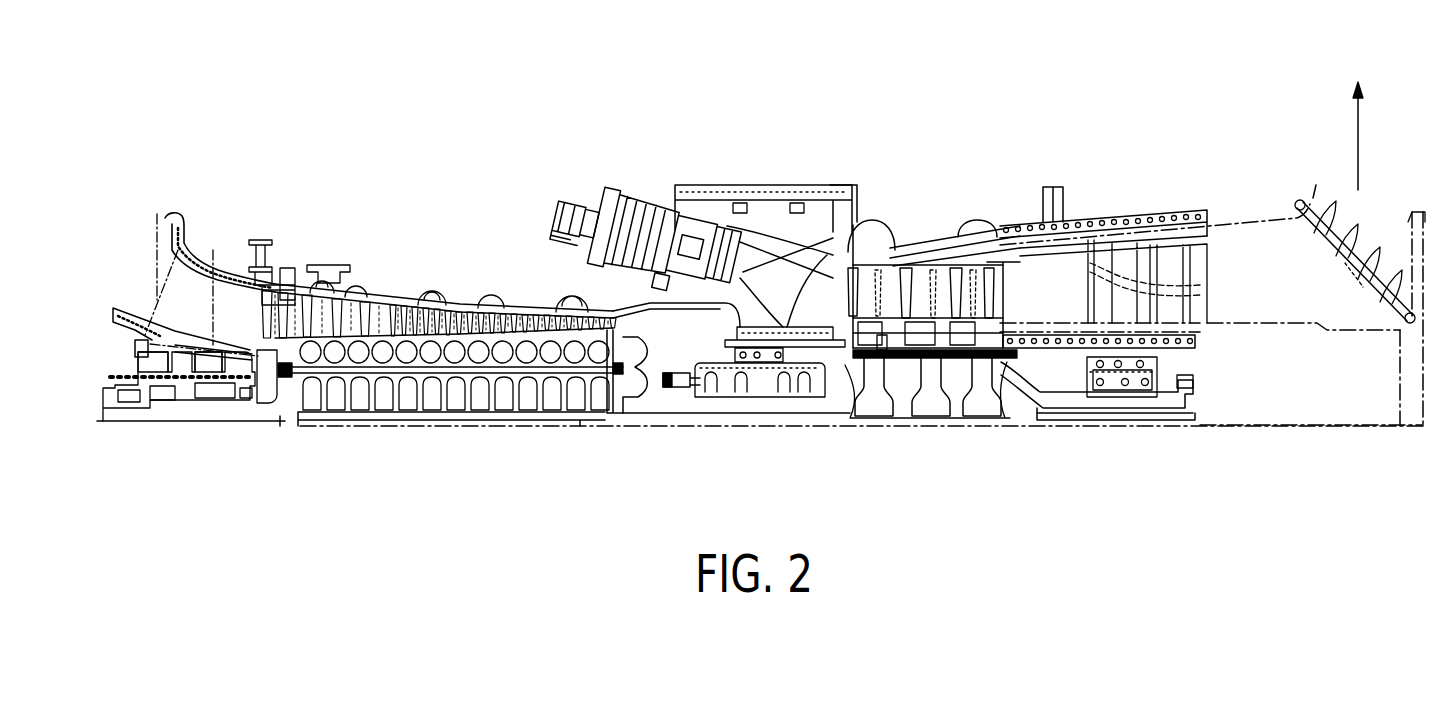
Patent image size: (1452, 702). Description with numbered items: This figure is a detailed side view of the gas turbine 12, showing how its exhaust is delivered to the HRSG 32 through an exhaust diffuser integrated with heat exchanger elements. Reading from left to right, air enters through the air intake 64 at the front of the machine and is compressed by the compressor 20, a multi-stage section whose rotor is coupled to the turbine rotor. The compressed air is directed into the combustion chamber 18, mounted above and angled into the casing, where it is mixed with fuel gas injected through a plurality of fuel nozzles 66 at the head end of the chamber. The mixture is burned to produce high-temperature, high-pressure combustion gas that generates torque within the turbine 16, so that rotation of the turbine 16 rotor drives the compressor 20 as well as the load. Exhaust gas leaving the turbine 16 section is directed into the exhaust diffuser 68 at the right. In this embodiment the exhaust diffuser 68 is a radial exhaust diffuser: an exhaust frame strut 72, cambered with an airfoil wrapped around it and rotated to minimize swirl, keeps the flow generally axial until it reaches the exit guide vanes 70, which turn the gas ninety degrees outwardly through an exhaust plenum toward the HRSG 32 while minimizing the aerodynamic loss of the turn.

The gas turbine 12 is at (786, 450).
The turbine 16 is at (966, 175).
The combustion chamber 18 is at (817, 203).
The compressor 20 is at (577, 282).
The HRSG 32 is at (1342, 118).
The air intake 64 is at (172, 318).
The fuel nozzles 66 is at (612, 213).
The exhaust diffuser 68 is at (1413, 170).
The exit guide vanes 70 is at (1363, 287).
The exhaust frame strut 72 is at (1113, 280).